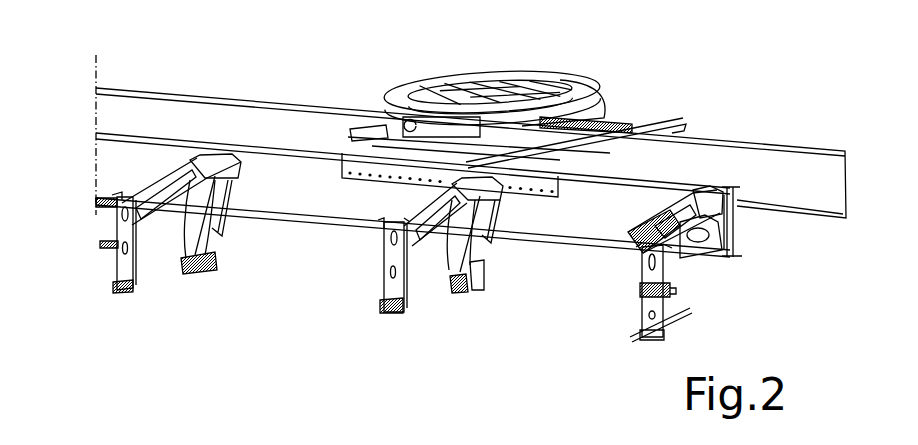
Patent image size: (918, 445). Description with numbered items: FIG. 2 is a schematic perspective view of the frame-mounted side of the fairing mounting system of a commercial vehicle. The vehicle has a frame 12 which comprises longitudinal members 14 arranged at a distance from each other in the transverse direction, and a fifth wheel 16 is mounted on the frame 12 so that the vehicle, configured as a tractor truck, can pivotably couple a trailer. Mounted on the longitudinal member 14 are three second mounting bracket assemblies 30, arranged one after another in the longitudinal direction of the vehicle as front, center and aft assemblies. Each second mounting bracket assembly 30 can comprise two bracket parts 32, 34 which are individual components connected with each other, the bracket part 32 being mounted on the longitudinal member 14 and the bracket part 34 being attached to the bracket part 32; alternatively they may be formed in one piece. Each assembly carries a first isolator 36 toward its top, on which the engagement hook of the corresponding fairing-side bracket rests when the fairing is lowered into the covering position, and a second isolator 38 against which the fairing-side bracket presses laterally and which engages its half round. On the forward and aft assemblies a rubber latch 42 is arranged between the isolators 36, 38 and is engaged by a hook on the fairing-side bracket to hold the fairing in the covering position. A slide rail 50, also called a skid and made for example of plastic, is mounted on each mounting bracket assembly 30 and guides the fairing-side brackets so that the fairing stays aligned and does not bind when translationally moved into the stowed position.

The frame 12 is at (297, 219).
The longitudinal member 14 is at (208, 98).
The fifth wheel 16 is at (632, 96).
The second mounting bracket assembly 30 is at (152, 230).
The bracket part 32 is at (150, 187).
The bracket part 34 is at (110, 268).
The first isolator 36 is at (96, 212).
The second isolator 38 is at (112, 292).
The latch 42 is at (100, 247).
The slide rail 50 is at (734, 226).